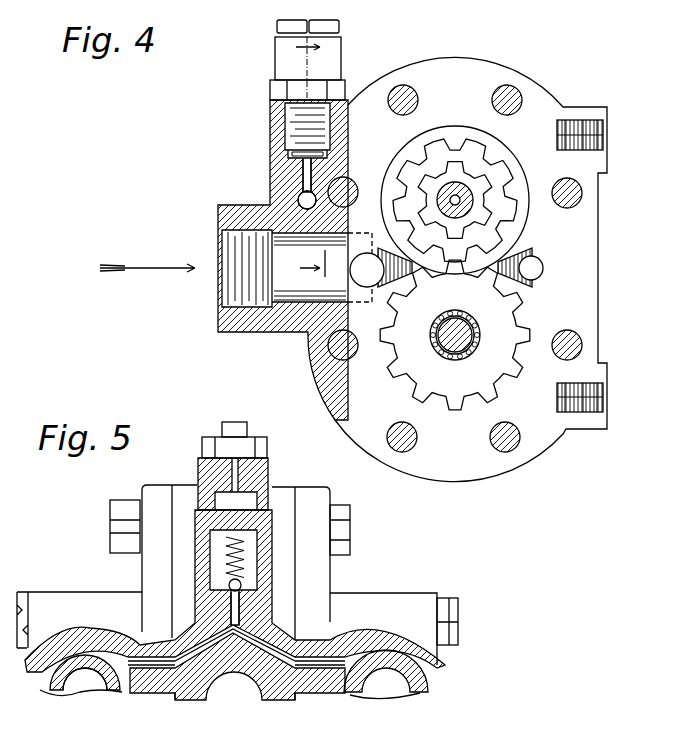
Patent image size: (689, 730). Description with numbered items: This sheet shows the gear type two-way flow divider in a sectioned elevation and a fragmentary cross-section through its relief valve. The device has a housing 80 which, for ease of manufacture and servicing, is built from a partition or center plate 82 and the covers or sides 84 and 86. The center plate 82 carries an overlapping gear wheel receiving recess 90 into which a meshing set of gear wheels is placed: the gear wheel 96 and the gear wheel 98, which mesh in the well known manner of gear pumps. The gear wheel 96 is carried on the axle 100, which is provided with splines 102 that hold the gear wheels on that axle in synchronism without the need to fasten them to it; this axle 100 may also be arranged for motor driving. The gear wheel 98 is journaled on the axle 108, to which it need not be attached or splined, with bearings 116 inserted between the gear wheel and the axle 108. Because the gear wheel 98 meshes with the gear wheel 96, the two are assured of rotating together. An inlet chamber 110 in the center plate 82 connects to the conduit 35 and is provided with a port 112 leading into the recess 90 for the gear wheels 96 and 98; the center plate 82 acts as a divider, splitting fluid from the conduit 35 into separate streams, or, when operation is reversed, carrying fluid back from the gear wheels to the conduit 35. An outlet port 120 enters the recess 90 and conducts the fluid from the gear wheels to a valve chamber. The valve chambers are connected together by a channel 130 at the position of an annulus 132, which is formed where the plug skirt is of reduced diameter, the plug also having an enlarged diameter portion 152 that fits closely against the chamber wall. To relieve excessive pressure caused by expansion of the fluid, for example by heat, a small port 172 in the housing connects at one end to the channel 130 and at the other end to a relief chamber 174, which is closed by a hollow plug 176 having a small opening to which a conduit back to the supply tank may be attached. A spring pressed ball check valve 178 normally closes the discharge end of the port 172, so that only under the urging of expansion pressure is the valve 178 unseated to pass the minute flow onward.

In FIG. 4, the conduit 35 is at (225, 291).
In FIG. 4, the housing 80 is at (521, 67).
In FIG. 4, the center plate 82 is at (466, 62).
In FIG. 5, the center plate 82 is at (283, 692).
In FIG. 5, the cover 84 is at (58, 597).
In FIG. 5, the cover 86 is at (384, 598).
In FIG. 4, the gear wheel receiving recess 90 is at (526, 206).
In FIG. 4, the gear wheel 96 is at (455, 131).
In FIG. 4, the gear wheel 98 is at (465, 405).
In FIG. 4, the axle 100 is at (447, 187).
In FIG. 4, the splines 102 is at (470, 182).
In FIG. 4, the axle 108 is at (442, 352).
In FIG. 4, the inlet chamber 110 is at (285, 308).
In FIG. 5, the inlet chamber 110 is at (208, 690).
In FIG. 4, the port 112 is at (380, 267).
In FIG. 4, the bearings 116 is at (480, 323).
In FIG. 4, the outlet port 120 is at (535, 266).
In FIG. 4, the channel 130 is at (300, 197).
In FIG. 5, the channel 130 is at (137, 657).
In FIG. 5, the annulus 132 is at (48, 685).
In FIG. 5, the enlarged diameter portion 152 is at (118, 690).
In FIG. 4, the port 172 is at (305, 178).
In FIG. 5, the port 172 is at (230, 605).
In FIG. 4, the relief chamber 174 is at (337, 100).
In FIG. 5, the relief chamber 174 is at (250, 583).
In FIG. 4, the hollow plug 176 is at (270, 92).
In FIG. 5, the hollow plug 176 is at (270, 472).
In FIG. 4, the ball check valve 178 is at (300, 162).
In FIG. 5, the ball check valve 178 is at (228, 584).